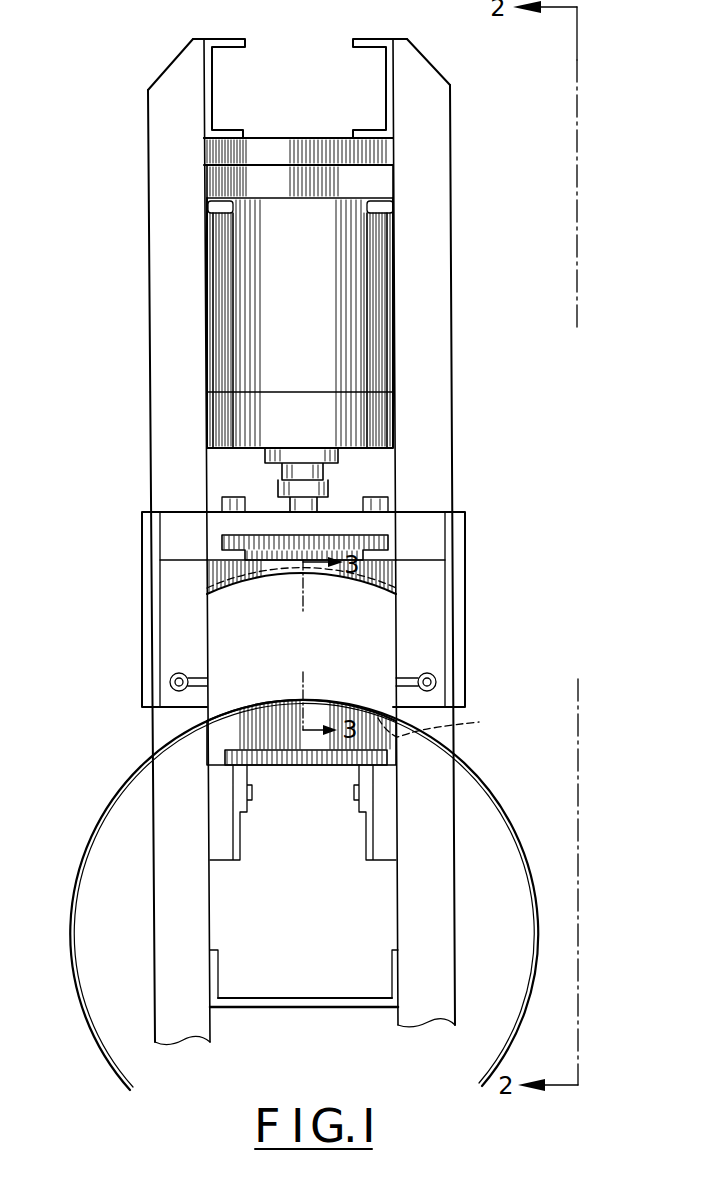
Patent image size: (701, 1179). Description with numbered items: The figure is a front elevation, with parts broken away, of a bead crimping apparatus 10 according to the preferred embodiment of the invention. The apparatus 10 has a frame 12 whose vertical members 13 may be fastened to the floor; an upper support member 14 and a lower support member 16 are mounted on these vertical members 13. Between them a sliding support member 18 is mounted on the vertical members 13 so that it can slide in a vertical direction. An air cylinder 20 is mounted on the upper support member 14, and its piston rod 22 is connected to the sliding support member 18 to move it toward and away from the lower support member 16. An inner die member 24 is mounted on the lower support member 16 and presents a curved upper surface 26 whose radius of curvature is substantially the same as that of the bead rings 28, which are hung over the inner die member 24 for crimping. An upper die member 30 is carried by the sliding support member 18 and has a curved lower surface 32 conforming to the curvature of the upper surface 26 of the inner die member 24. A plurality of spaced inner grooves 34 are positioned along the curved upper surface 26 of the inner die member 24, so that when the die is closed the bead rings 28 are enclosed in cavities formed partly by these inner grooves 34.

The bead crimping apparatus 10 is at (474, 478).
The frame 12 is at (440, 335).
The vertical members 13 is at (185, 344).
The upper support member 14 is at (310, 148).
The lower support member 16 is at (295, 753).
The sliding support member 18 is at (322, 526).
The air cylinder 20 is at (360, 268).
The piston rod 22 is at (285, 505).
The inner die member 24 is at (372, 740).
The curved upper surface 26 is at (255, 707).
The bead rings 28 is at (512, 838).
The upper die member 30 is at (403, 575).
The curved lower surface 32 is at (337, 573).
The inner grooves 34 is at (445, 722).